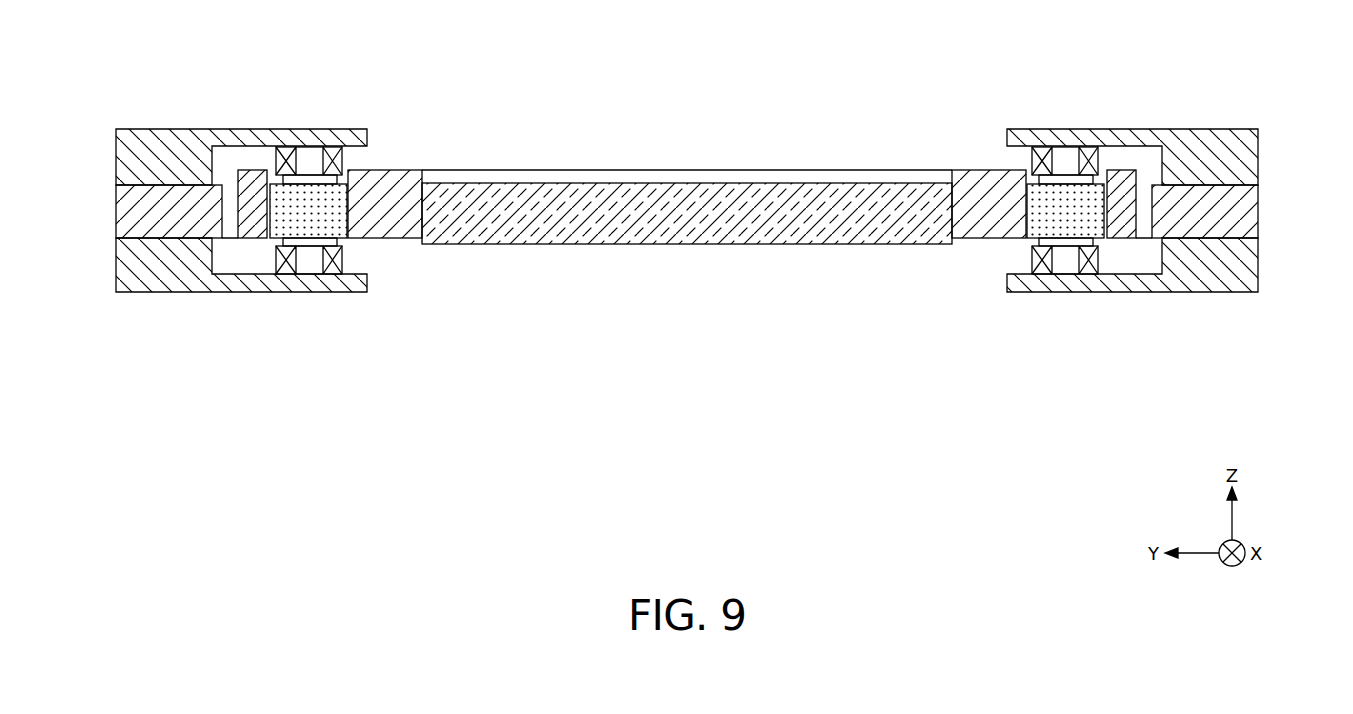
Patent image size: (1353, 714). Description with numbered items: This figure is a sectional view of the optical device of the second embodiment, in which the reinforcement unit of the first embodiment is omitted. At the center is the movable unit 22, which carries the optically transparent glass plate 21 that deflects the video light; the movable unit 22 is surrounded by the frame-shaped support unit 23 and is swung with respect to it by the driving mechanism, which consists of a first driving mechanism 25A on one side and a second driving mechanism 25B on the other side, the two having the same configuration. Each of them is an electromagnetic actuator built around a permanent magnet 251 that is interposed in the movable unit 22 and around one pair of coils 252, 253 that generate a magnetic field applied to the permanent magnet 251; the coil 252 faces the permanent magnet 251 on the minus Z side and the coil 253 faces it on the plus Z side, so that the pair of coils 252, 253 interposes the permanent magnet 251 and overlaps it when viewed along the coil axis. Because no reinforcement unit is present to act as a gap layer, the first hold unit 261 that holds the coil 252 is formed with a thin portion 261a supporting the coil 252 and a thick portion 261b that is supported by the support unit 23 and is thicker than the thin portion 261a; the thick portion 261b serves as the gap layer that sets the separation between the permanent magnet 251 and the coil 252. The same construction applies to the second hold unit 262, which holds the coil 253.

The glass plate 21 is at (682, 205).
The movable unit 22 is at (950, 165).
The support unit 23 is at (130, 213).
The first driving mechanism 25A is at (384, 101).
The second driving mechanism 25B is at (1012, 100).
The permanent magnet 251 is at (332, 213).
The coil 252 is at (310, 152).
The coil 253 is at (309, 262).
The first hold unit 261 is at (687, 109).
The thin portion 261a is at (283, 135).
The thick portion 261b is at (150, 155).
The second hold unit 262 is at (228, 284).